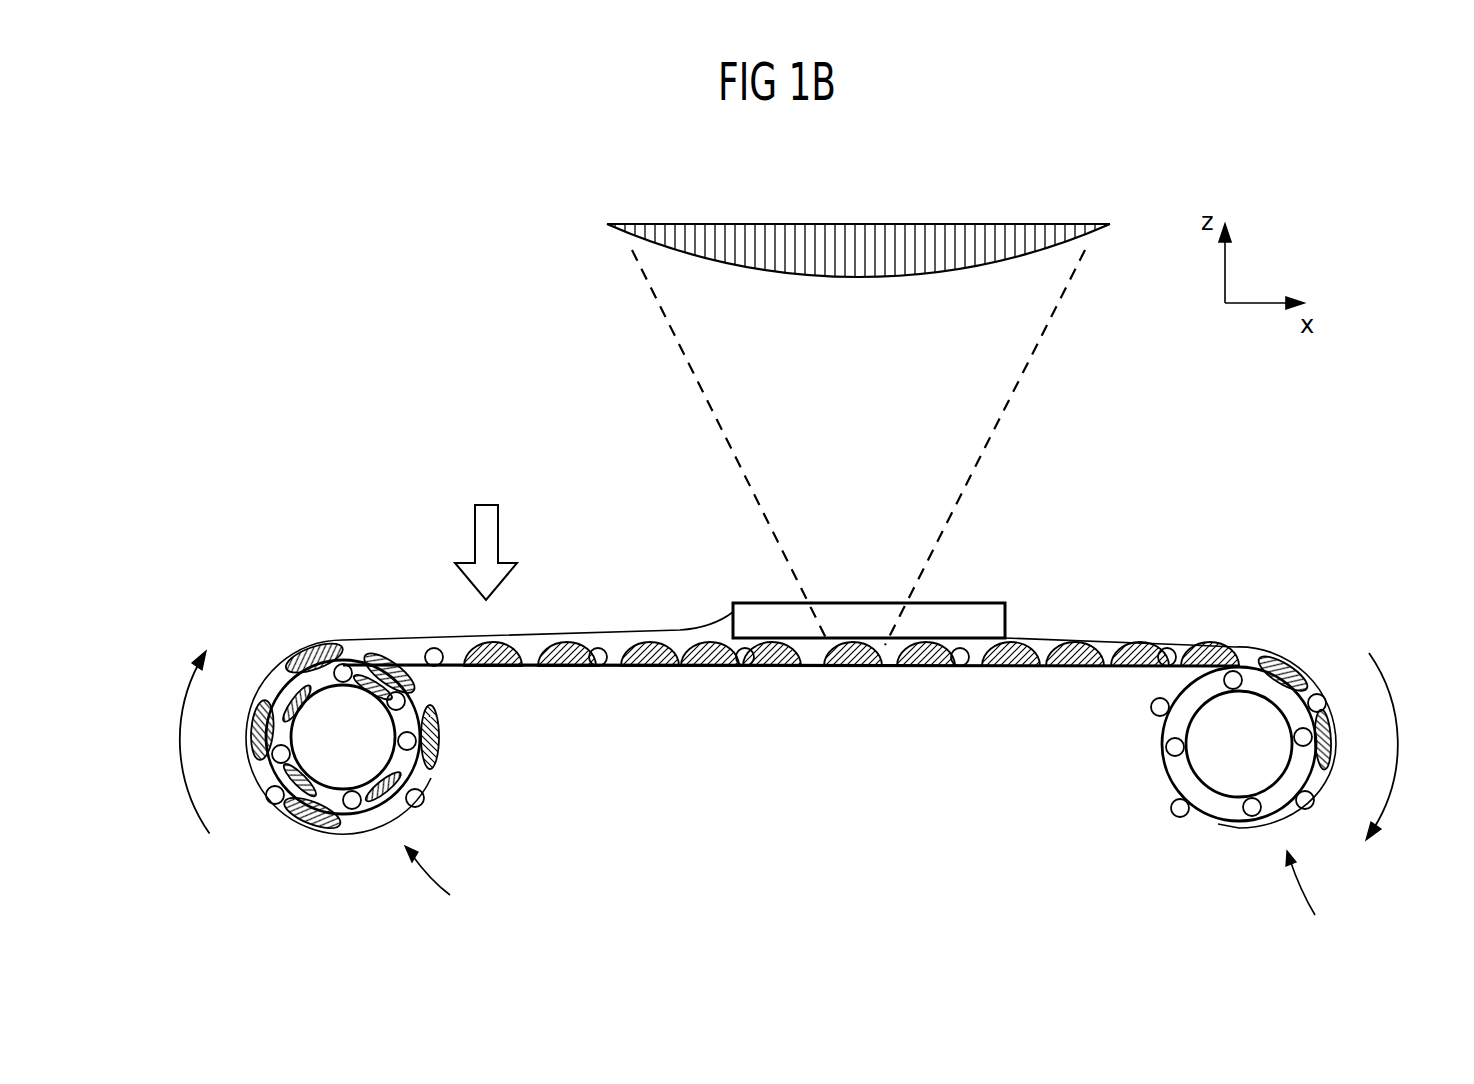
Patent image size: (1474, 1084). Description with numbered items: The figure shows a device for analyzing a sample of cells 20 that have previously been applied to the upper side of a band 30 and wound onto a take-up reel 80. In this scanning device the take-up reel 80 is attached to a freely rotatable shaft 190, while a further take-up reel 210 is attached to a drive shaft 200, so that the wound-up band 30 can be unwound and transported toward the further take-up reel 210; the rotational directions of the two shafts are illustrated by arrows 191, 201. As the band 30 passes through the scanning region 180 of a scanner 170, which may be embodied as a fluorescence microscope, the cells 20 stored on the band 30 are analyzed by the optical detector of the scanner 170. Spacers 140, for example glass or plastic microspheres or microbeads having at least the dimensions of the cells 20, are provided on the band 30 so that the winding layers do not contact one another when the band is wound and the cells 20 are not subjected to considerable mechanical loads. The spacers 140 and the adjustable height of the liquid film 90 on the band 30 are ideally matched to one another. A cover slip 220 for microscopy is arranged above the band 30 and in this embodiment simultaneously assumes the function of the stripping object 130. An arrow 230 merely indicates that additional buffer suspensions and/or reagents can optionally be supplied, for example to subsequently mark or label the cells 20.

The cells 20 is at (315, 650).
The band 30 is at (613, 668).
The take-up reel 80 is at (435, 890).
The liquid film 90 is at (685, 638).
The stripping object 130 is at (985, 602).
The spacers 140 is at (343, 662).
The scanner 170 is at (1015, 240).
The scanning region 180 is at (1026, 375).
The freely rotatable shaft 190 is at (327, 790).
The arrow 191 is at (178, 745).
The drive shaft 200 is at (1233, 775).
The arrow 201 is at (1397, 712).
The further take-up reel 210 is at (1310, 901).
The cover slip 220 is at (900, 584).
The arrow 230 is at (490, 527).